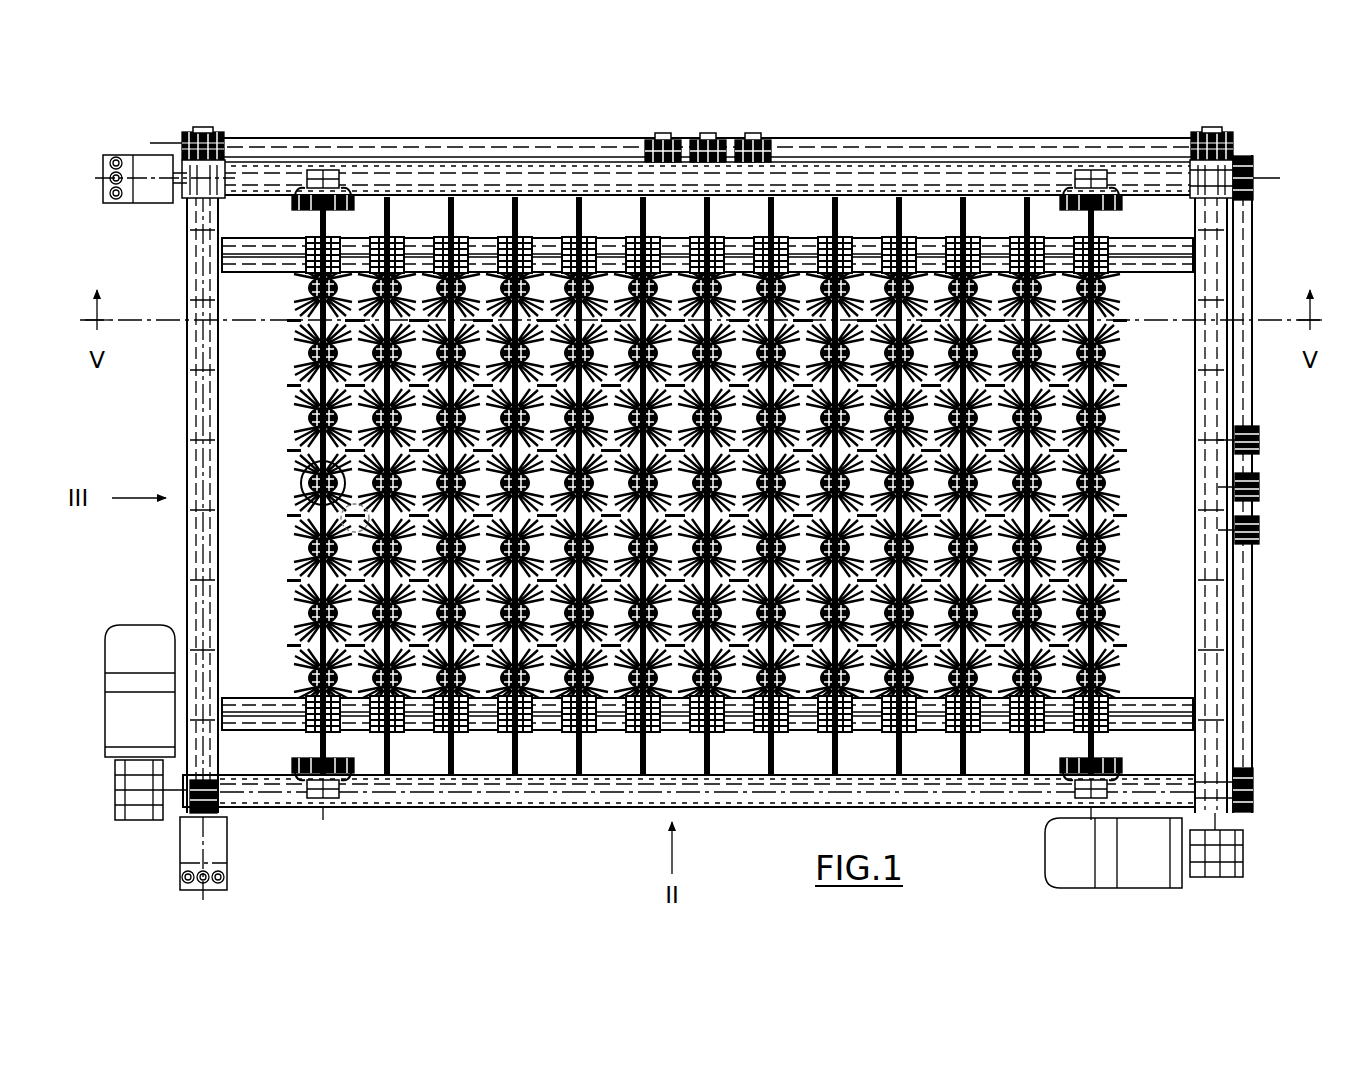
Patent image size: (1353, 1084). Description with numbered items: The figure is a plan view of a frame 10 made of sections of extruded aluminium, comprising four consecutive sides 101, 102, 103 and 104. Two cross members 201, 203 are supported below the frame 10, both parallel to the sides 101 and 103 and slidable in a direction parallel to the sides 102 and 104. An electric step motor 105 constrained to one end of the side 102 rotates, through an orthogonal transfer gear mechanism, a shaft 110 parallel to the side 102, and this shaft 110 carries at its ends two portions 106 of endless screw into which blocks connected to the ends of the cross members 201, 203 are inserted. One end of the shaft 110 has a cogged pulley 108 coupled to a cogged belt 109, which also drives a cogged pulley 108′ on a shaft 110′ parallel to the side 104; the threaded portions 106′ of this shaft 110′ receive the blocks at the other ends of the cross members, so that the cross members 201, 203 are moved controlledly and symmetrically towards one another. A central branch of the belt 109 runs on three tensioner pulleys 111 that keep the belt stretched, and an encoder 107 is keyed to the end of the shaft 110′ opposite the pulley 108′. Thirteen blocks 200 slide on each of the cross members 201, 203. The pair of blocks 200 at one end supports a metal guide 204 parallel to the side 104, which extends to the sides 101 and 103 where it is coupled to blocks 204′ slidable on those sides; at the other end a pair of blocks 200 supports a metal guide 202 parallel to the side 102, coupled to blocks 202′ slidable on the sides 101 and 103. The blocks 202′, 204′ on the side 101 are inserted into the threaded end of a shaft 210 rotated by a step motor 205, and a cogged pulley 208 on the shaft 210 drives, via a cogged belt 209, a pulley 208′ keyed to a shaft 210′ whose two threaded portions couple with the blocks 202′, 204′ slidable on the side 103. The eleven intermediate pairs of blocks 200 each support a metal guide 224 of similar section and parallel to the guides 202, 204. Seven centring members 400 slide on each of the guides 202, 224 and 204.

The frame 10 is at (168, 458).
The first side of frame 101 is at (753, 807).
The second side of frame 102 is at (1220, 618).
The third side of frame 103 is at (887, 180).
The fourth side of frame 104 is at (188, 400).
The electric step motor 105 is at (1150, 878).
The endless screw portions 106 is at (1213, 240).
The threaded portions 106′ is at (200, 232).
The encoder 107 is at (190, 850).
The cogged pulley 108 is at (1230, 135).
The cogged pulley 108′ is at (218, 135).
The cogged belt 109 is at (822, 140).
The shaft 110 is at (1215, 572).
The shaft 110′ is at (205, 553).
The tensioner pulleys 111 is at (748, 133).
The blocks 200 is at (392, 243).
The cross member 201 is at (262, 697).
The metal guide 202 is at (1098, 458).
The blocks 202′ is at (1088, 185).
The cross member 203 is at (268, 274).
The metal guide 204 is at (320, 448).
The blocks 204′ is at (328, 172).
The step motor 205 is at (110, 665).
The cogged pulley 208 is at (1255, 775).
The cogged pulley 208′ is at (1255, 165).
The cogged belt 209 is at (1250, 285).
The shaft 210 is at (572, 792).
The shaft 210′ is at (587, 178).
The metal guide 224 is at (516, 210).
The centring members 400 is at (1105, 345).